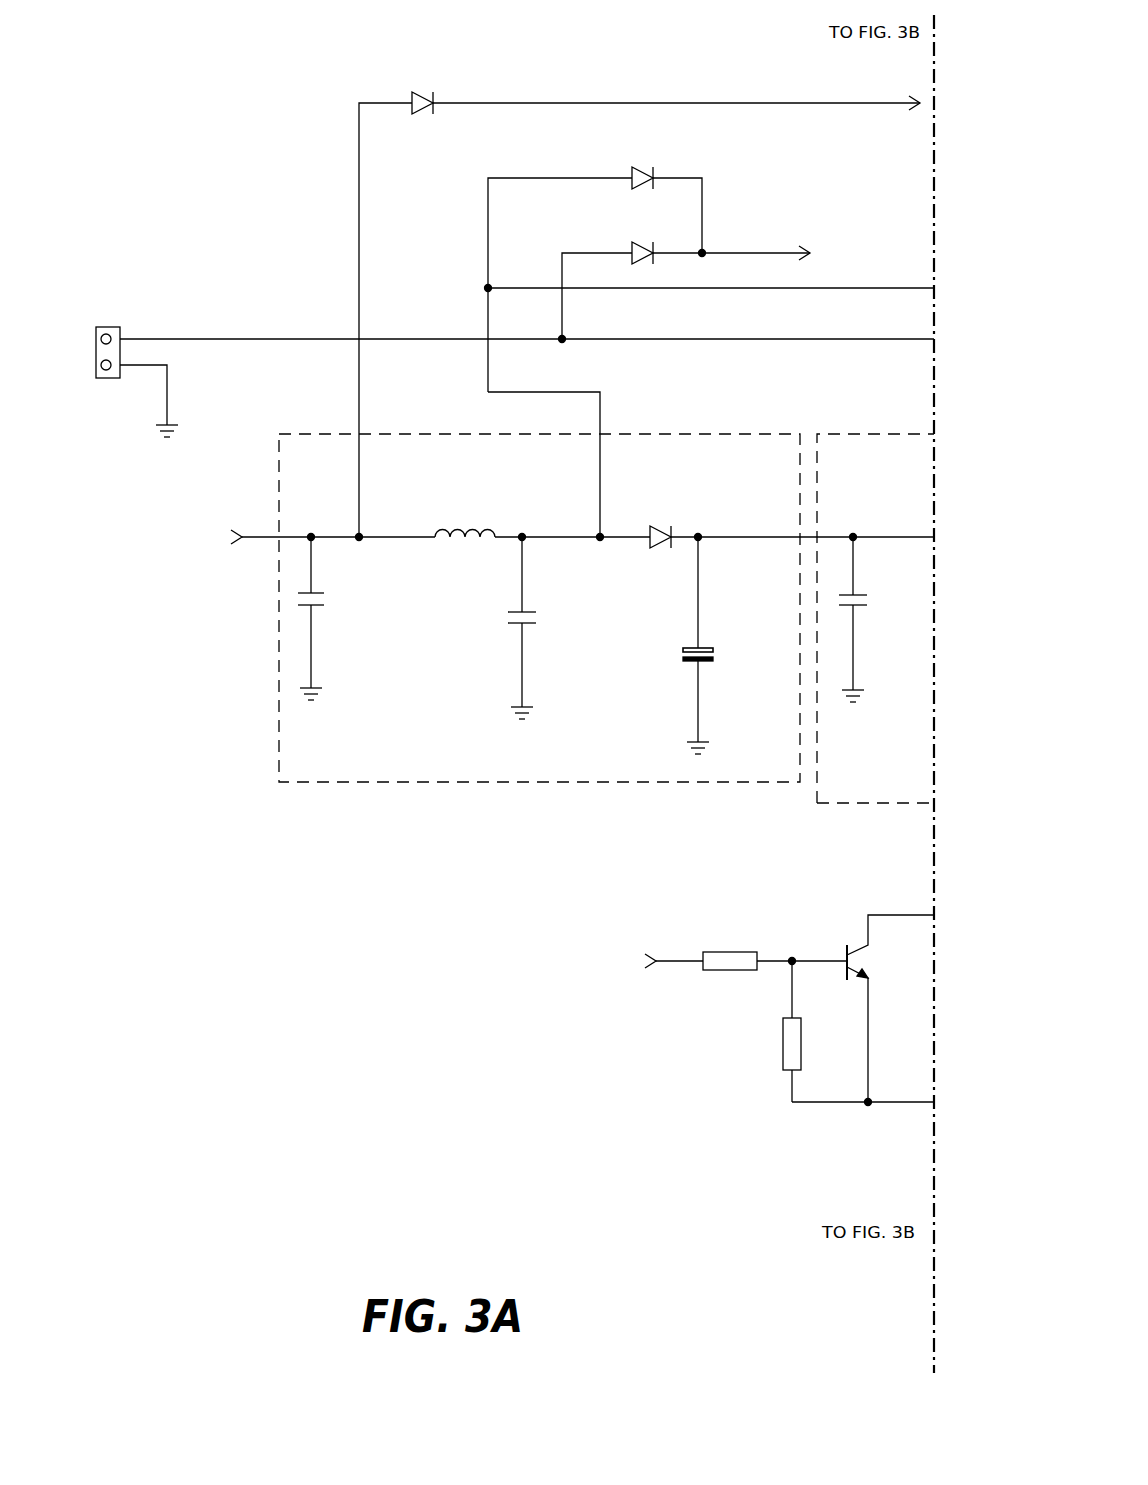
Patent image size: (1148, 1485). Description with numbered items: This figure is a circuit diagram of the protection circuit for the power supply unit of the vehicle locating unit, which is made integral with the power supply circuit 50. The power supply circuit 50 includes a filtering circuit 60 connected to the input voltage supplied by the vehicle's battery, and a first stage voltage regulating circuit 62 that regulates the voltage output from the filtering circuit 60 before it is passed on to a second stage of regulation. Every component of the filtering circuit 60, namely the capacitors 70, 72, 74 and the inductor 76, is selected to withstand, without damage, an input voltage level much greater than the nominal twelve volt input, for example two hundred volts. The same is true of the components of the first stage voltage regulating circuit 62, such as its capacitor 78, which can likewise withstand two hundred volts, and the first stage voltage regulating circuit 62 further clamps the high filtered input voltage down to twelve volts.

The power supply circuit 50 is at (179, 221).
The filtering circuit 60 is at (652, 434).
The first stage voltage regulating circuit 62 is at (833, 434).
The capacitor 70 is at (308, 599).
The capacitor 72 is at (509, 617).
The capacitor 74 is at (681, 655).
The inductor 76 is at (445, 509).
The capacitor 78 is at (845, 597).